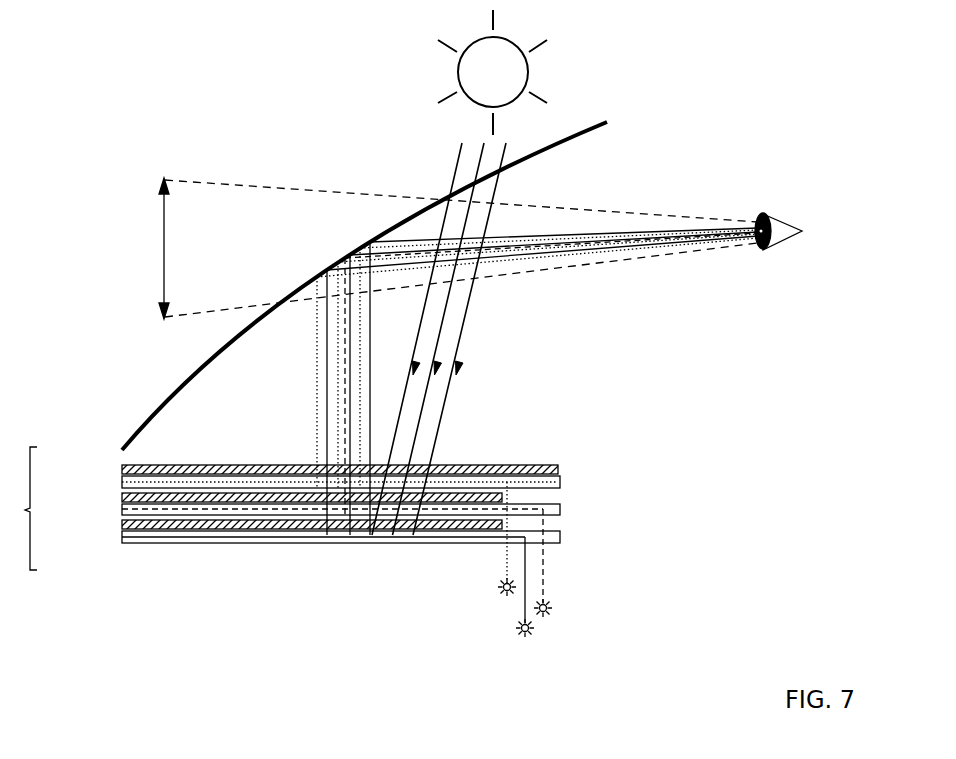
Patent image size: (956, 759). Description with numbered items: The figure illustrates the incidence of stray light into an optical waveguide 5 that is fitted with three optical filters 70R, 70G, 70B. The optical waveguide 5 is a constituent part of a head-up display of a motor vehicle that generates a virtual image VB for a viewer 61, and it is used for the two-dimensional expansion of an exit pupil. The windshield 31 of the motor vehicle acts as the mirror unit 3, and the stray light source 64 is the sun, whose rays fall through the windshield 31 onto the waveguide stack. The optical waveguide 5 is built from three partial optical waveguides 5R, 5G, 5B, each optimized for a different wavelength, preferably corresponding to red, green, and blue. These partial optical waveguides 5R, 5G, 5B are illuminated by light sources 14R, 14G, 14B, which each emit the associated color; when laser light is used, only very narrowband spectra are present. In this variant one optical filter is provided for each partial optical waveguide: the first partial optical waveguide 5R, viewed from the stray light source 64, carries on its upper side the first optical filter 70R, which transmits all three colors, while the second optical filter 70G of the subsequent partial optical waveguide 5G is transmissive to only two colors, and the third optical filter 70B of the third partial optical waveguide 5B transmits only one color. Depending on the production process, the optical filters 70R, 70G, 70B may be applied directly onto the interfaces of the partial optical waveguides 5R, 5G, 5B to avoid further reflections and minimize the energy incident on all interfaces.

The stray light source 64 is at (450, 70).
The viewer 61 is at (778, 212).
The virtual image VB is at (160, 232).
The mirror unit 3 is at (338, 286).
The windshield 31 is at (160, 402).
The optical waveguide 5 is at (20, 524).
The first partial optical waveguide 5R is at (350, 448).
The second partial optical waveguide 5G is at (301, 549).
The third partial optical waveguide 5B is at (301, 563).
The first optical filter 70R is at (557, 463).
The second optical filter 70G is at (182, 504).
The third optical filter 70B is at (265, 531).
The red light source 14R is at (497, 591).
The green light source 14G is at (551, 603).
The blue light source 14B is at (533, 634).